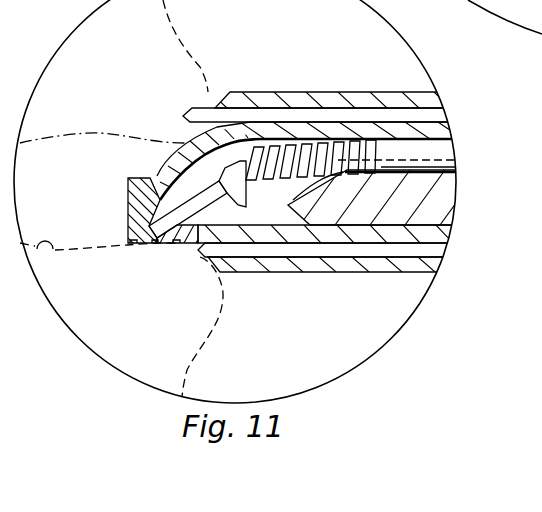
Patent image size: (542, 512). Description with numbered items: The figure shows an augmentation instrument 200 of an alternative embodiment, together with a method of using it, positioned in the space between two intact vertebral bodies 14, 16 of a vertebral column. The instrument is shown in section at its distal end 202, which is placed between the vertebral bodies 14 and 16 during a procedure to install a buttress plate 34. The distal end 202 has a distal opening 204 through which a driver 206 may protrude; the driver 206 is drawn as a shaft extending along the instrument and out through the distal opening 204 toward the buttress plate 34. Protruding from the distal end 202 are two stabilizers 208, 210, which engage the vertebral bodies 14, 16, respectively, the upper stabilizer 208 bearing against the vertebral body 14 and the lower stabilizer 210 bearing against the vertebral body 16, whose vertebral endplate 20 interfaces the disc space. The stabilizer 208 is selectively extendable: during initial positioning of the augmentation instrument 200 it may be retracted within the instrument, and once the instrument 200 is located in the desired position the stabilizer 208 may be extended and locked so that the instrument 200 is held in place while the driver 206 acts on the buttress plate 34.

The vertebral body 14 is at (139, 69).
The vertebral body 16 is at (139, 330).
The vertebral endplate 20 is at (53, 250).
The buttress plate 34 is at (128, 193).
The augmentation instrument 200 is at (284, 63).
The distal end 202 is at (155, 127).
The distal opening 204 is at (177, 193).
The driver 206 is at (439, 148).
The stabilizer 208 is at (192, 113).
The stabilizer 210 is at (200, 256).